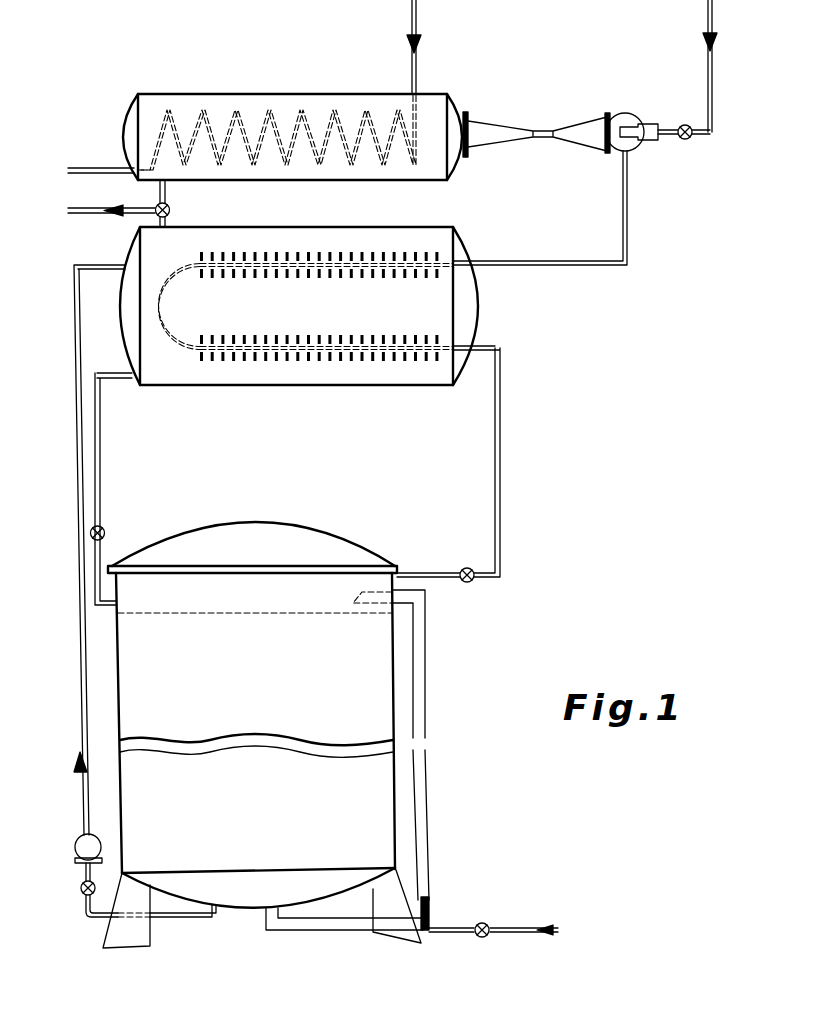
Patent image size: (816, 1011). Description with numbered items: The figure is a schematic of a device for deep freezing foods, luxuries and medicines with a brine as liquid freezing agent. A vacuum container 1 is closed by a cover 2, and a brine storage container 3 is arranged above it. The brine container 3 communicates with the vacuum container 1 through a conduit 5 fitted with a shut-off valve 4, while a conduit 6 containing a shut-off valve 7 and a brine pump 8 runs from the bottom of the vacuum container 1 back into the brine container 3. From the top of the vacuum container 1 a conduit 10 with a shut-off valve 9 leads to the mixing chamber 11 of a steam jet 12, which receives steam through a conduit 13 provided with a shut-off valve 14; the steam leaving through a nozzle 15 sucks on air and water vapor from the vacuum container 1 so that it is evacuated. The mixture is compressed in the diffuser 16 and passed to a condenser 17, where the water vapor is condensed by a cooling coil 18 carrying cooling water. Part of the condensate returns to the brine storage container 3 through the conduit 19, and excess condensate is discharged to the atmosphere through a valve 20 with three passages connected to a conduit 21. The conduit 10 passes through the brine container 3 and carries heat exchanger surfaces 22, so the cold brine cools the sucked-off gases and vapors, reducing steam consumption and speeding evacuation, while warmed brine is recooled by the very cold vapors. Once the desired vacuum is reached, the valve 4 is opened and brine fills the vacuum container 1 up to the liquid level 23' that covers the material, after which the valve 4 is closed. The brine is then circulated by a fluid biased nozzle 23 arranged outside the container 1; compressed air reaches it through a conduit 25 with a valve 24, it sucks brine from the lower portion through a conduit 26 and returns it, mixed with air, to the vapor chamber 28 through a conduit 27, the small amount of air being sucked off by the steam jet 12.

The vacuum container 1 is at (395, 696).
The cover 2 is at (236, 522).
The brine storage container 3 is at (312, 378).
The shut-off valve 4 is at (106, 532).
The conduit 5 is at (101, 457).
The conduit 6 is at (79, 672).
The shut-off valve 7 is at (80, 893).
The brine pump 8 is at (77, 838).
The shut-off valve 9 is at (467, 567).
The conduit 10 is at (501, 457).
The mixing chamber 11 is at (628, 118).
The steam jet 12 is at (616, 113).
The conduit 13 is at (707, 68).
The shut-off valve 14 is at (687, 141).
The nozzle 15 is at (641, 141).
The diffuser 16 is at (499, 124).
The condenser 17 is at (254, 94).
The cooling coil 18 is at (195, 128).
The conduit 19 is at (166, 195).
The valve with three passages 20 is at (169, 213).
The conduit 21 is at (127, 206).
The heat exchanger surfaces 22 is at (329, 250).
The fluid biased nozzle 23 is at (449, 907).
The liquid level 23' is at (255, 599).
The valve 24 is at (488, 940).
The conduit 25 is at (453, 936).
The conduit 26 is at (262, 925).
The conduit 27 is at (430, 803).
The vapor chamber 28 is at (340, 582).